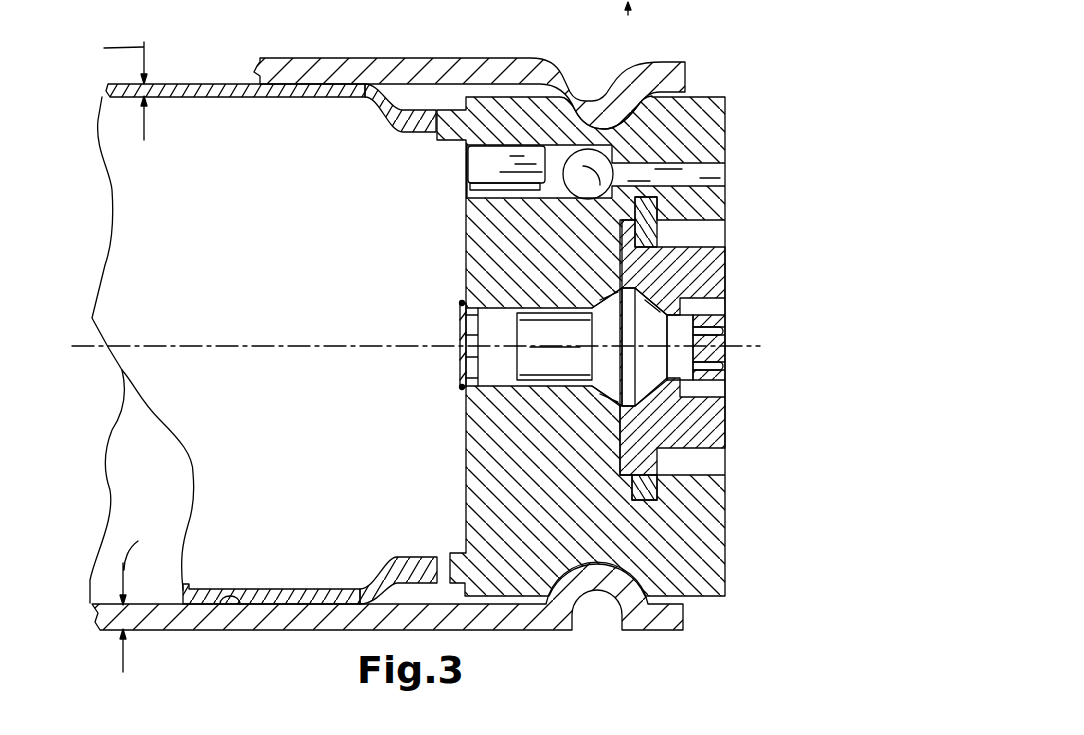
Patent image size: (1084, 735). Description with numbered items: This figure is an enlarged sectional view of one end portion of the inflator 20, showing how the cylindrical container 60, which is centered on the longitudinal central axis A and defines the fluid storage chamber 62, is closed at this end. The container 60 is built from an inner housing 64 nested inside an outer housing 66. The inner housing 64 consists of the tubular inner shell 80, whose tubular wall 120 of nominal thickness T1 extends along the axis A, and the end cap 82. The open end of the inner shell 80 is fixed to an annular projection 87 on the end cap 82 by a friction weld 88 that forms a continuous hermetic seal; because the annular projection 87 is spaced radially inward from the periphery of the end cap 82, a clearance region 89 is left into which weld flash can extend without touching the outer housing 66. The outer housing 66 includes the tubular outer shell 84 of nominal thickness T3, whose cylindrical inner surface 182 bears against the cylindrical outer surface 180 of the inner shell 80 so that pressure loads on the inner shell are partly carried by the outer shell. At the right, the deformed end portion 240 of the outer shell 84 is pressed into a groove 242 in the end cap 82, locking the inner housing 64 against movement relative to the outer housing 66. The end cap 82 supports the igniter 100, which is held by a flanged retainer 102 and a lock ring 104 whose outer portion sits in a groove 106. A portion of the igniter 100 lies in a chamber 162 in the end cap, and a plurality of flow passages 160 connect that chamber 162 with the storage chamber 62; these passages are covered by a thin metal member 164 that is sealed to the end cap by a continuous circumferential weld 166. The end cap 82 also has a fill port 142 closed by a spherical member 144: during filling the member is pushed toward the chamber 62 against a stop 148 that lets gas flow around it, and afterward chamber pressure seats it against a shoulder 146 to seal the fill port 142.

The inflator 20 is at (732, 48).
The cylindrical container 60 is at (695, 91).
The chamber 62 is at (238, 192).
The inner housing 64 is at (435, 100).
The outer housing 66 is at (356, 52).
The inner shell 80 is at (266, 578).
The end cap 82 is at (680, 557).
The outer shell 84 is at (293, 70).
The annular projection 87 is at (445, 562).
The friction weld 88 is at (428, 128).
The clearance region 89 is at (410, 582).
The igniter 100 is at (705, 344).
The flanged retainer 102 is at (700, 272).
The lock ring 104 is at (648, 232).
The groove 106 is at (640, 490).
The tubular wall 120 is at (258, 96).
The fill port 142 is at (690, 173).
The spherical member 144 is at (590, 172).
The shoulder 146 is at (620, 170).
The stop 148 is at (492, 166).
The flow passages 160 is at (466, 377).
The chamber 162 is at (503, 365).
The metal member 164 is at (460, 320).
The circumferential weld 166 is at (460, 302).
The cylindrical outer surface 180 is at (237, 82).
The cylindrical inner surface 182 is at (225, 601).
The deformed end portion 240 is at (633, 104).
The groove 242 is at (582, 100).
The longitudinal central axis A is at (73, 345).
The nominal thickness T1 is at (114, 89).
The nominal thickness T3 is at (142, 595).